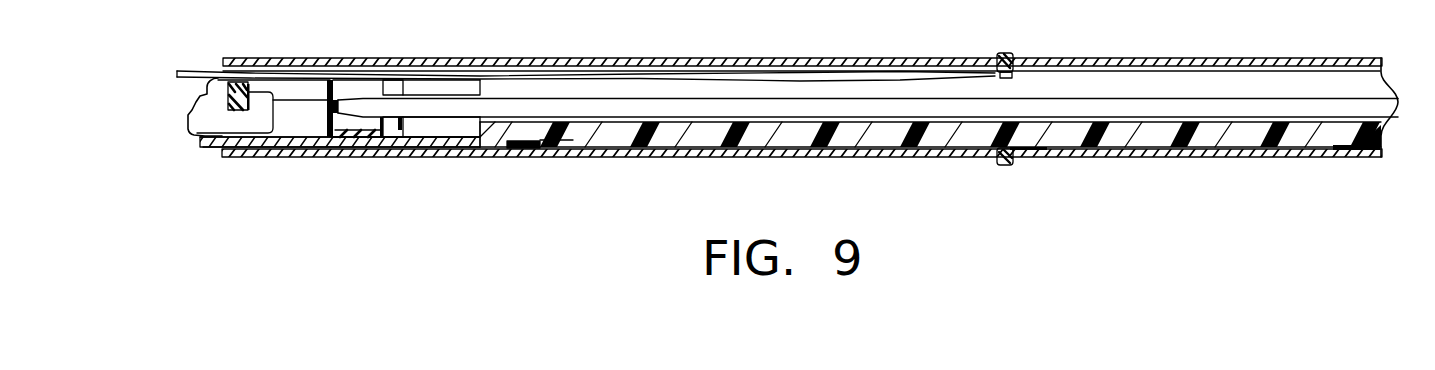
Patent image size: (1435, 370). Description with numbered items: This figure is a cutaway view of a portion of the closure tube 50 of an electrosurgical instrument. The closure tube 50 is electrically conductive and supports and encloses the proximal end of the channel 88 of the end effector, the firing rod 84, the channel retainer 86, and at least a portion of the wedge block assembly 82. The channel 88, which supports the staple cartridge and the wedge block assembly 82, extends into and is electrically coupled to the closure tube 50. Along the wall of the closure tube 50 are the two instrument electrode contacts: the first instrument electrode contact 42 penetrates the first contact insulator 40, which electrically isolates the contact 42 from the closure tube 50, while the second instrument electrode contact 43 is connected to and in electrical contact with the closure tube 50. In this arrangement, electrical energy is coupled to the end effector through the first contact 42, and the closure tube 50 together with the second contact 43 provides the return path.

The first contact insulator 40 is at (948, 60).
The first instrument electrode contact 42 is at (1006, 52).
The second instrument electrode contact 43 is at (1000, 167).
The closure tube 50 is at (670, 62).
The wedge block assembly 82 is at (245, 82).
The firing rod 84 is at (413, 108).
The channel retainer 86 is at (795, 132).
The channel 88 is at (396, 143).